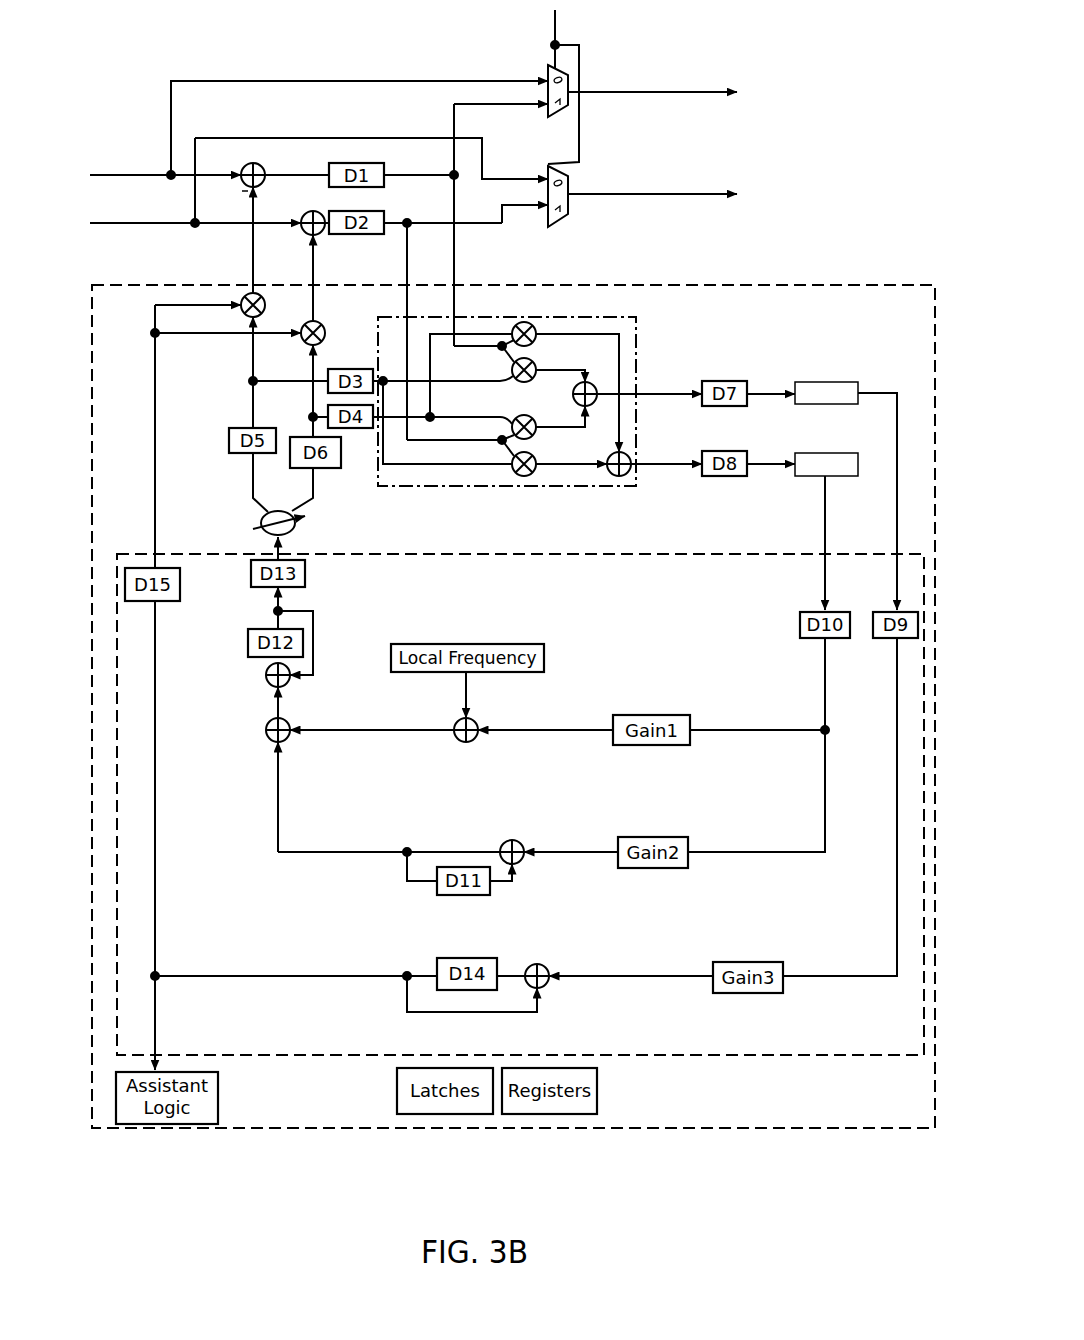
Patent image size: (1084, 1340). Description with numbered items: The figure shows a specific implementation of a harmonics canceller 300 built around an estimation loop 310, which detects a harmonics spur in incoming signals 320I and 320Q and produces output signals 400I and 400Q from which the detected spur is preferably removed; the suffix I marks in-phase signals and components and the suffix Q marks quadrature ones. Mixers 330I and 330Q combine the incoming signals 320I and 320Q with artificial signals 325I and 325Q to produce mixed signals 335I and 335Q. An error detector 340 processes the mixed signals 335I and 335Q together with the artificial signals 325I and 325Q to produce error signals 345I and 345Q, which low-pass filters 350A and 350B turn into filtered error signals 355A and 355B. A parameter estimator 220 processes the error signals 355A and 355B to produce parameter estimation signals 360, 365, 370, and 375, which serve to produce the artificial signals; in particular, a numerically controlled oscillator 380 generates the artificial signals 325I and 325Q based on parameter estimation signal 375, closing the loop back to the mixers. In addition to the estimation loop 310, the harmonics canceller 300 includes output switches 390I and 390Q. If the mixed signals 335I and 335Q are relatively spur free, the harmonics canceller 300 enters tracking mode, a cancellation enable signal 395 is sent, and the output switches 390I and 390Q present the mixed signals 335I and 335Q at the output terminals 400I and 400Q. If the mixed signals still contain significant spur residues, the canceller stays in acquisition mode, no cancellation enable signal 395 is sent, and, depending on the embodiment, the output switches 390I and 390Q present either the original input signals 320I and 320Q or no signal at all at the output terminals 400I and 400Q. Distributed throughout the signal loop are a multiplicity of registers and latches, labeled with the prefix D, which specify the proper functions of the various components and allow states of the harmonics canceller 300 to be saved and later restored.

The harmonics canceller 300 is at (324, 94).
The cancellation enable signal 395 is at (669, 87).
The estimation loop 310 is at (513, 694).
The error detector 340 is at (507, 388).
The parameter estimator 220 is at (520, 791).
The incoming signal (in-phase) 320I is at (165, 162).
The incoming signal (quadrature) 320Q is at (195, 182).
The mixer (in-phase) 330I is at (256, 215).
The mixer (quadrature) 330Q is at (302, 254).
The mixed signal (in-phase) 335I is at (361, 225).
The mixed signal (quadrature) 335Q is at (413, 316).
The artificial signal (in-phase) 325I is at (239, 482).
The artificial signal (quadrature) 325Q is at (328, 486).
The numerically controlled oscillator 380 is at (233, 529).
The error signal (in-phase) 345I is at (637, 383).
The error signal (quadrature) 345Q is at (654, 454).
The low-pass filter 350A is at (802, 393).
The low-pass filter 350B is at (802, 464).
The error signal (filtered) 355A is at (871, 501).
The error signal (filtered) 355B is at (798, 543).
The parameter estimation signal 375 is at (269, 664).
The parameter estimation signal 360 is at (317, 778).
The parameter estimation signal 365 is at (448, 853).
The parameter estimation signal 370 is at (432, 981).
The output switch (in-phase) 390I is at (511, 85).
The output switch (quadrature) 390Q is at (381, 182).
The output terminal (in-phase) 400I is at (652, 81).
The output terminal (quadrature) 400Q is at (652, 184).